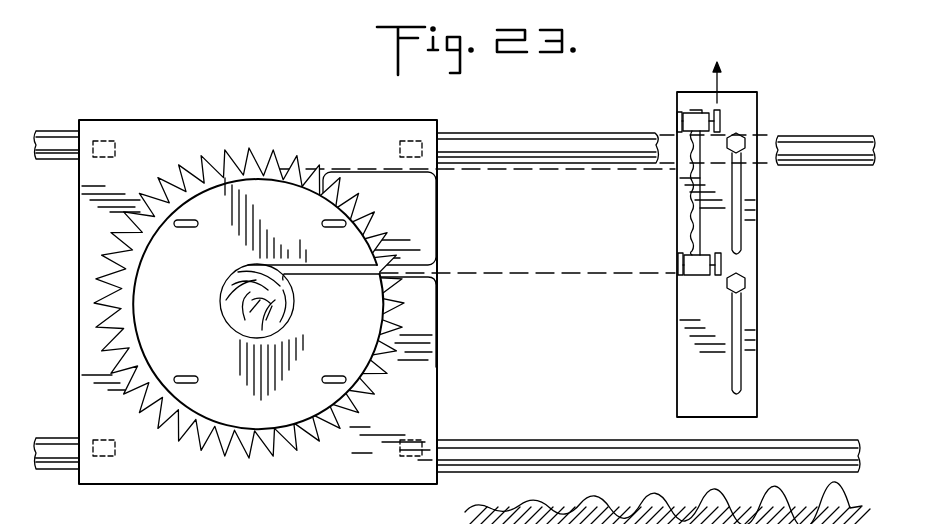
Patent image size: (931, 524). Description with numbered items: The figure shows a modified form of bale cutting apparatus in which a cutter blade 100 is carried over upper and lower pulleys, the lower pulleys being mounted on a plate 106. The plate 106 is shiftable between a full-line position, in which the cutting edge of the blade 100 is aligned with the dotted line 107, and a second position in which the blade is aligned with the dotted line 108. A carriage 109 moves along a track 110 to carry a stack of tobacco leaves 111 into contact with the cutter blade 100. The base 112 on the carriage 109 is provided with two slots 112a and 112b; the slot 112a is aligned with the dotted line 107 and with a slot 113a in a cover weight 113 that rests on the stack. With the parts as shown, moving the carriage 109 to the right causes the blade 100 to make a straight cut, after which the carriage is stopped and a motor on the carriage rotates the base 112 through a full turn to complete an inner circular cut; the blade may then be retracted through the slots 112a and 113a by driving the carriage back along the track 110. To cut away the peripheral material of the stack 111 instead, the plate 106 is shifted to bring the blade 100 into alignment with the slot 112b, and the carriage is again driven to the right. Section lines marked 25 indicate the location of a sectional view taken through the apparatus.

The section line 25 is at (770, 62).
The cutter blade 100 is at (697, 197).
The plate 106 is at (758, 342).
The dotted line 107 is at (592, 275).
The dotted line 108 is at (591, 171).
The carriage 109 is at (87, 486).
The track 110 is at (576, 455).
The stack of tobacco leaves 111 is at (407, 313).
The base 112 is at (410, 269).
The slot 112a is at (440, 270).
The slot 112b is at (440, 173).
The cover weight 113 is at (215, 395).
The slot 113a is at (330, 278).